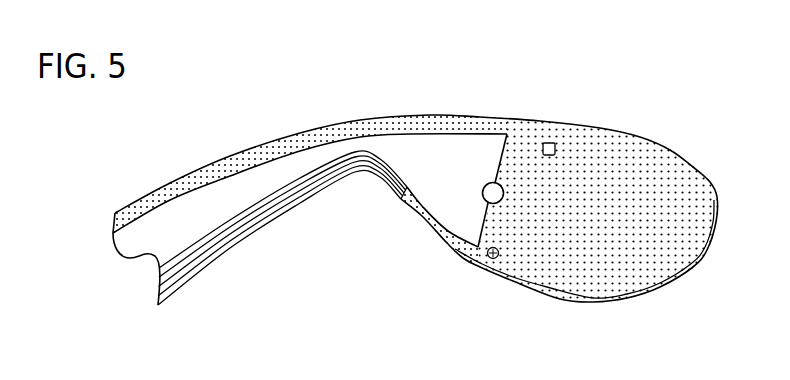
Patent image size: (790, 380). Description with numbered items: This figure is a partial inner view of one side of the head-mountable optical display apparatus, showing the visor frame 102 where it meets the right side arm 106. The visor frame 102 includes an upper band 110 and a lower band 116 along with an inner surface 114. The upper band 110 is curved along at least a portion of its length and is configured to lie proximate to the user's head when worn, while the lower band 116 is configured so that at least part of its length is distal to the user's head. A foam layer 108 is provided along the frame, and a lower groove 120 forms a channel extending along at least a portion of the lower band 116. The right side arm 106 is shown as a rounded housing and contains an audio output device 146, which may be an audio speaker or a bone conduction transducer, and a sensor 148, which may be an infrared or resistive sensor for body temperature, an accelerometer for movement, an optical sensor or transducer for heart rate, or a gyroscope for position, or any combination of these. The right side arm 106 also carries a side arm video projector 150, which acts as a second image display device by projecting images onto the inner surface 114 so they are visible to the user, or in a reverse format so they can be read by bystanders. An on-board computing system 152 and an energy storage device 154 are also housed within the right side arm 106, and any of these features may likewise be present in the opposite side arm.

The visor frame 102 is at (158, 180).
The right side arm 106 is at (536, 114).
The foam layer 108 is at (242, 163).
The upper band 110 is at (302, 132).
The inner surface 114 is at (325, 152).
The lower band 116 is at (297, 202).
The lower groove 120 is at (222, 240).
The audio output device 146 is at (491, 259).
The sensor 148 is at (549, 143).
The side arm video projector 150 is at (484, 199).
The on-board computing system 152 is at (572, 163).
The energy storage device 154 is at (532, 242).